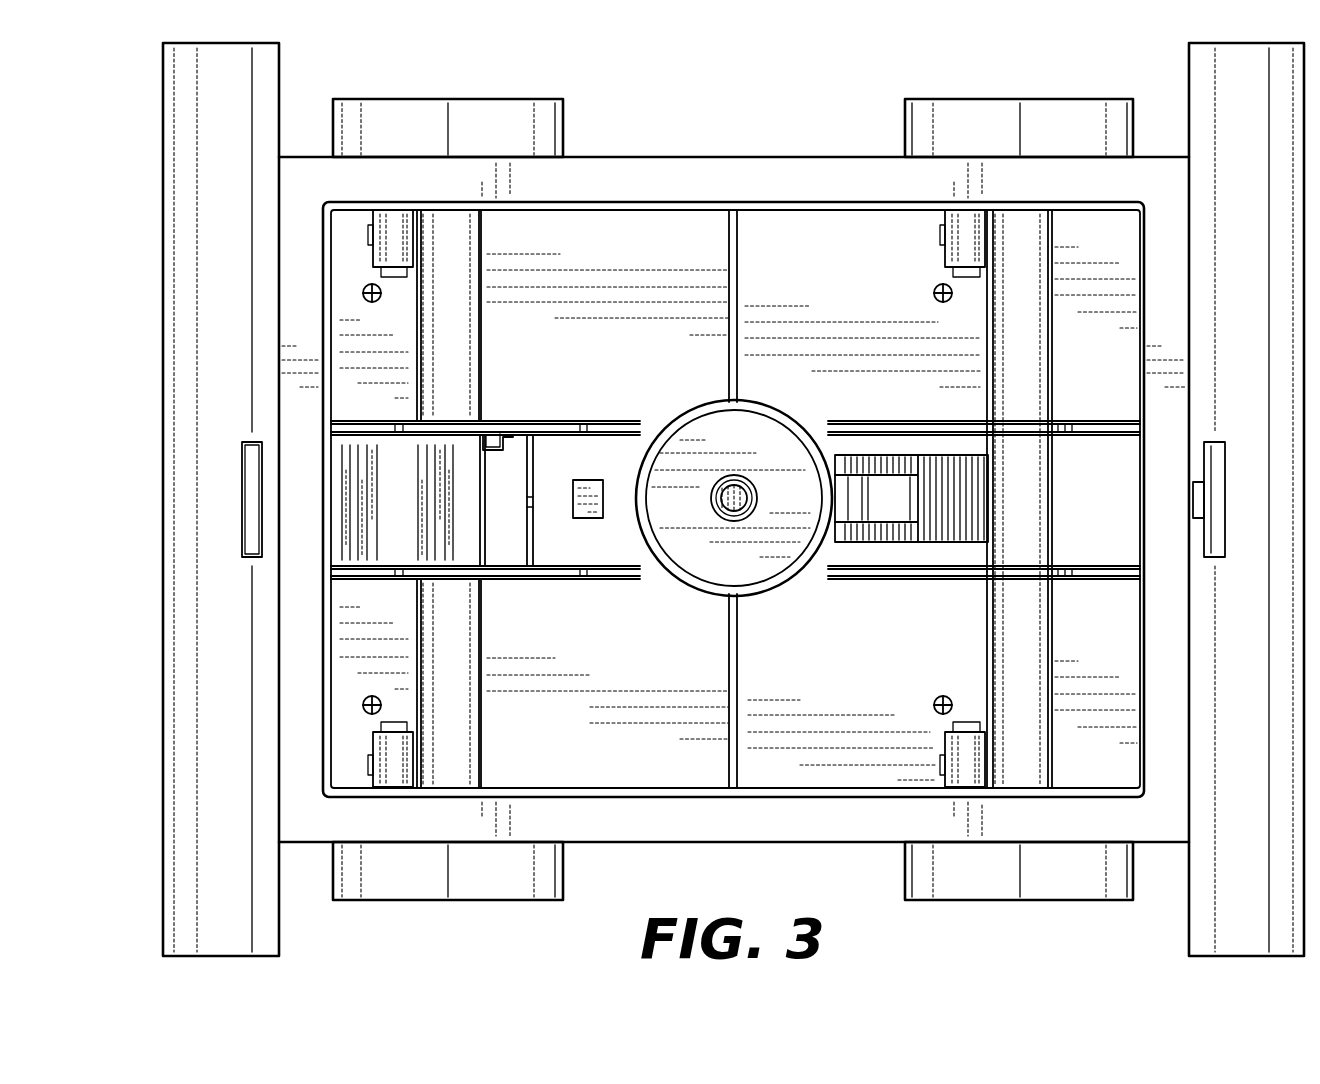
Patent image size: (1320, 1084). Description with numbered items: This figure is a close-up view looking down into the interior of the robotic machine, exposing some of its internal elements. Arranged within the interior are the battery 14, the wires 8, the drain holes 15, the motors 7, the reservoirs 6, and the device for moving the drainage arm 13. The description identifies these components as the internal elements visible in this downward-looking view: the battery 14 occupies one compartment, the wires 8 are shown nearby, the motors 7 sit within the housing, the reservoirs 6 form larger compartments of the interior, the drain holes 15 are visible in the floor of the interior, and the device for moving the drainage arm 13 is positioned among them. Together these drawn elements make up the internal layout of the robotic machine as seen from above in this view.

The reservoirs 6 is at (770, 230).
The motors 7 is at (965, 218).
The wires 8 is at (512, 436).
The device for moving the drainage arm 13 is at (935, 530).
The battery 14 is at (388, 545).
The drain holes 15 is at (365, 708).